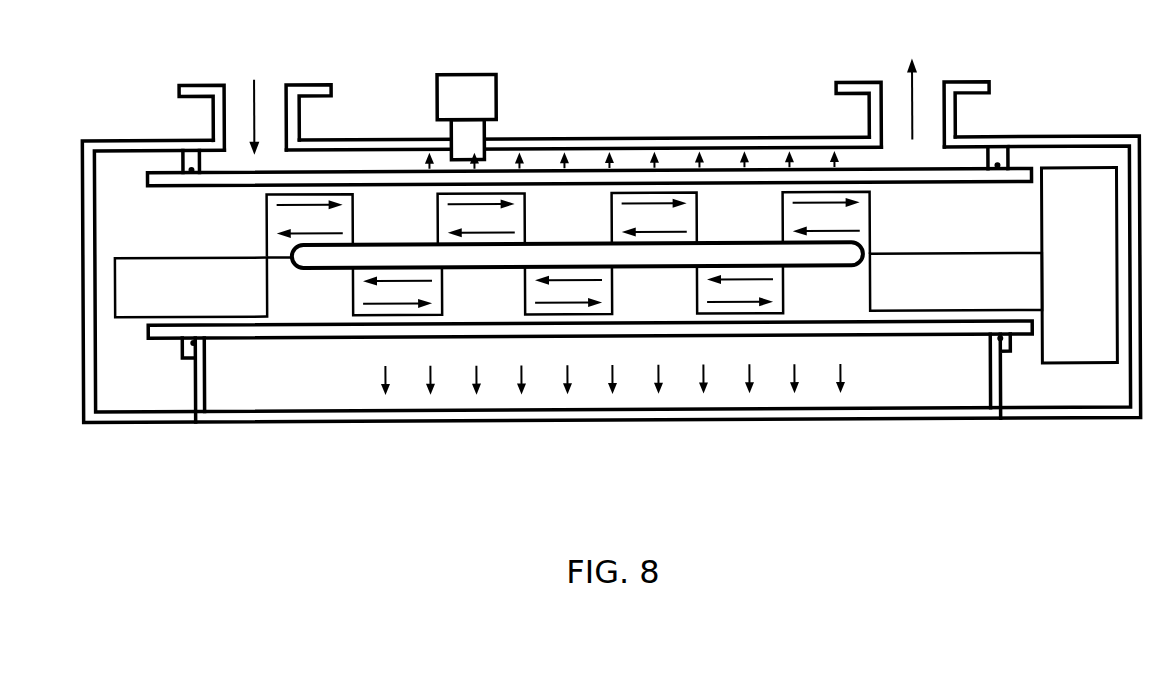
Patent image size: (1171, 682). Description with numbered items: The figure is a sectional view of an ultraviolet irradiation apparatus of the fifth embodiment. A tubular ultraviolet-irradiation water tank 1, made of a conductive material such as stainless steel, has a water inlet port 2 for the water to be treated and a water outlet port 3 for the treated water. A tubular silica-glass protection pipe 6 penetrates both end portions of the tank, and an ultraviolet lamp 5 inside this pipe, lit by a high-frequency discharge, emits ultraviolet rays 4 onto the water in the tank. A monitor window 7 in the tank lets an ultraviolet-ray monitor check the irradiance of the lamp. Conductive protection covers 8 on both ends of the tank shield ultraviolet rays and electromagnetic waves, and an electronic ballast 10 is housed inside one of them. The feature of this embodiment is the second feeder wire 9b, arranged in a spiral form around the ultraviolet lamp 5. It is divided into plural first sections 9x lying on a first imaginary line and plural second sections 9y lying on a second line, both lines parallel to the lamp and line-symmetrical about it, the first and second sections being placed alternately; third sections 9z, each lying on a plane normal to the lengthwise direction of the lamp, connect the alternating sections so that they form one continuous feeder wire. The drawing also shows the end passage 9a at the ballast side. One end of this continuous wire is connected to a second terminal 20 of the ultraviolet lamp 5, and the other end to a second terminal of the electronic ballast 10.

The ultraviolet-irradiation water tank 1 is at (402, 138).
The water inlet port 2 is at (310, 83).
The water outlet port 3 is at (861, 83).
The ultraviolet rays 4 is at (749, 160).
The ultraviolet lamp 5 is at (591, 243).
The protection pipe 6 is at (677, 170).
The monitor window 7 is at (498, 97).
The protection covers 8 is at (121, 137).
The right end passage 9a is at (955, 254).
The second feeder wire 9b is at (133, 318).
The first sections 9x is at (271, 195).
The second sections 9y is at (192, 313).
The third sections 9z is at (525, 210).
The electronic ballast 10 is at (1076, 365).
The second terminal 20 is at (281, 258).